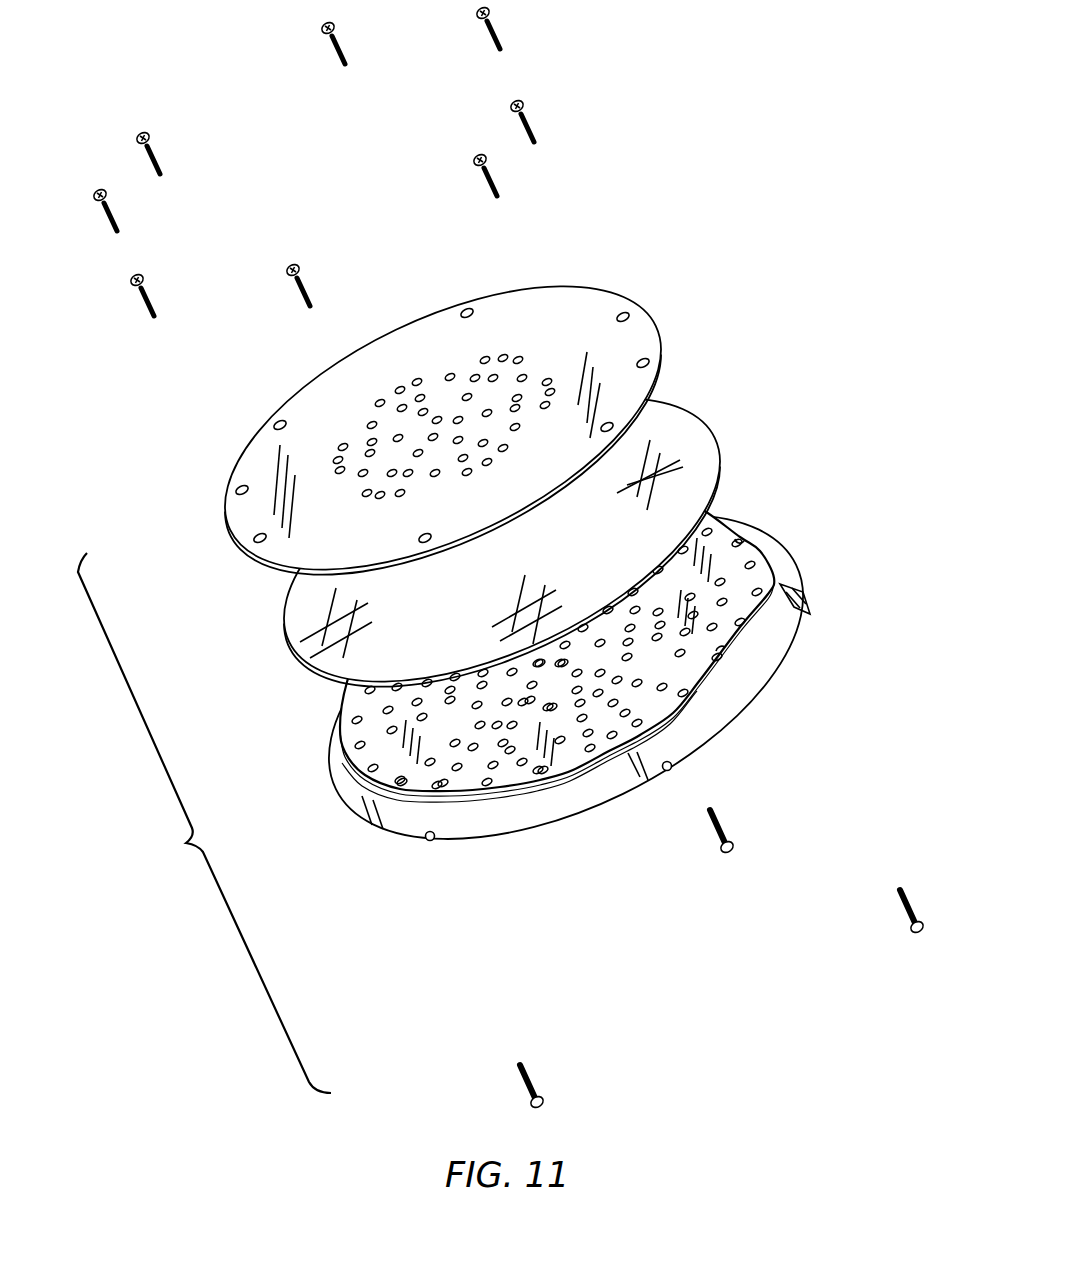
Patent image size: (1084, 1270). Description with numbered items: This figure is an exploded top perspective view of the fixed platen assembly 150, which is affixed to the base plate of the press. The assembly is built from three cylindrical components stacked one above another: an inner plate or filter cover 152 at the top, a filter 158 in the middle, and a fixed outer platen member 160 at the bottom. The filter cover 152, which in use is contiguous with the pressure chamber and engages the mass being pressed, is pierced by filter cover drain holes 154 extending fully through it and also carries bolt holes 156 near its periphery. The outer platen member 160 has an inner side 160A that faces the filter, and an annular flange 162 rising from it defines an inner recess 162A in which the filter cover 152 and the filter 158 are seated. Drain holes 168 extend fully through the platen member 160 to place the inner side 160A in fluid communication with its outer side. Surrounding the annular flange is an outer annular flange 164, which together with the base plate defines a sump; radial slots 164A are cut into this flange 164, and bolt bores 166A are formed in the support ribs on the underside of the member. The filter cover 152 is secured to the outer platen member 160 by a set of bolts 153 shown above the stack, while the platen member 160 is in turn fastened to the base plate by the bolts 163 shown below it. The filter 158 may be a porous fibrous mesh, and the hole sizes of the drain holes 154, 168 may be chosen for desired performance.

The fixed platen assembly 150 is at (748, 112).
The filter cover 152 is at (456, 428).
The bolts 153 is at (484, 27).
The filter cover drain holes 154 is at (437, 417).
The bolt holes 156 is at (607, 424).
The filter 158 is at (286, 630).
The fixed outer platen member 160 is at (340, 787).
The inner side 160A is at (520, 760).
The annular flange 162 is at (580, 678).
The inner recess 162A is at (383, 745).
The bolts 163 is at (722, 852).
The outer annular flange 164 is at (768, 678).
The radial slots 164A is at (428, 840).
The bolt bores 166A is at (720, 650).
The drain holes 168 is at (528, 762).